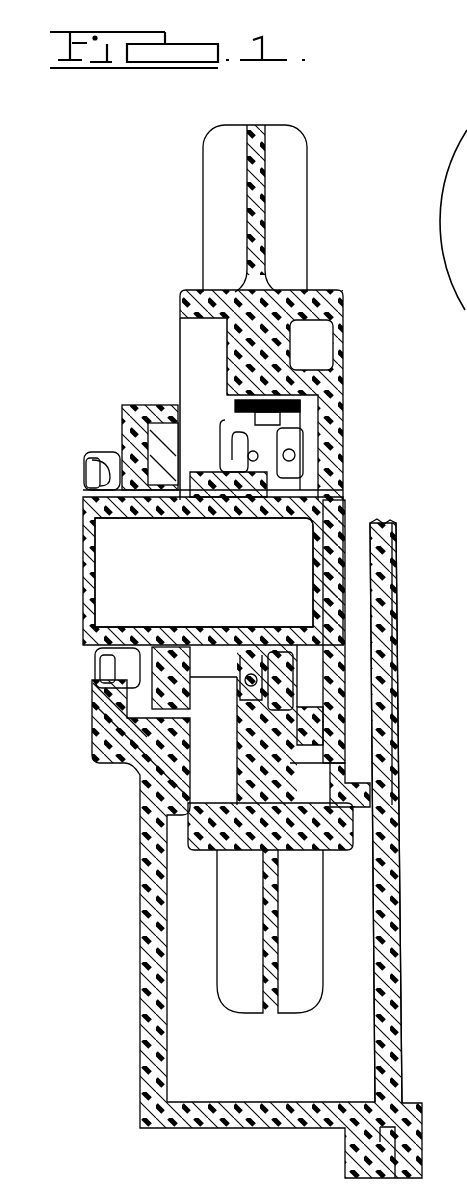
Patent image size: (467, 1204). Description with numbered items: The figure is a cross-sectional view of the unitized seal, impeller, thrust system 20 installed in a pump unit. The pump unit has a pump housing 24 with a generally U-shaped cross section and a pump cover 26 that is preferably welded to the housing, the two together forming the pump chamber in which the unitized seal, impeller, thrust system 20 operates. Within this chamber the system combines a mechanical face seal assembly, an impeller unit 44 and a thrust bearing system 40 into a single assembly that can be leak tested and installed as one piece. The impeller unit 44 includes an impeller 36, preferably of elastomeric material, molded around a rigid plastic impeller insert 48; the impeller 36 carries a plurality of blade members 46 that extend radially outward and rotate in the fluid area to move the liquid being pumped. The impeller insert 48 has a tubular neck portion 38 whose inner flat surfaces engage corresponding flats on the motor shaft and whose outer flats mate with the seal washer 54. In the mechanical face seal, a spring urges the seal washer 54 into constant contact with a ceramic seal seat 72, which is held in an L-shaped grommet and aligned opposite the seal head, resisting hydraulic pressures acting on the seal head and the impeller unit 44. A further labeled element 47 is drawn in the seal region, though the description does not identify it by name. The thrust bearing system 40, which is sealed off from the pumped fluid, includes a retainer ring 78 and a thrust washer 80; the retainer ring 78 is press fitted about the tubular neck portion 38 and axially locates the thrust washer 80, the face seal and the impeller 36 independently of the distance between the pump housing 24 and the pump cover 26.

The unitized seal, impeller, thrust system 20 is at (128, 372).
The pump housing 24 is at (150, 943).
The pump cover 26 is at (385, 680).
The impeller 36 is at (305, 355).
The tubular neck portion 38 is at (138, 512).
The thrust bearing system 40 is at (86, 468).
The impeller unit 44 is at (338, 616).
The blade members 46 is at (290, 150).
The seal chamber 47 is at (300, 448).
The impeller insert 48 is at (312, 586).
The seal washer 54 is at (205, 465).
The seal seat 72 is at (178, 672).
The retainer ring 78 is at (98, 455).
The thrust washer 80 is at (125, 452).